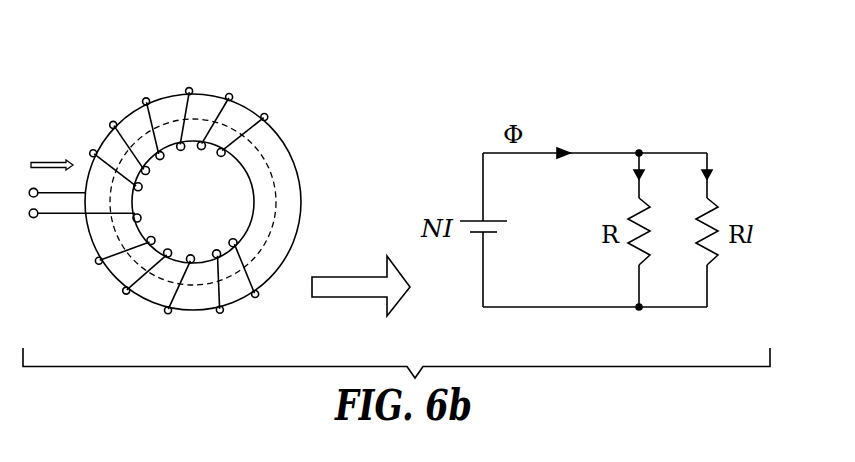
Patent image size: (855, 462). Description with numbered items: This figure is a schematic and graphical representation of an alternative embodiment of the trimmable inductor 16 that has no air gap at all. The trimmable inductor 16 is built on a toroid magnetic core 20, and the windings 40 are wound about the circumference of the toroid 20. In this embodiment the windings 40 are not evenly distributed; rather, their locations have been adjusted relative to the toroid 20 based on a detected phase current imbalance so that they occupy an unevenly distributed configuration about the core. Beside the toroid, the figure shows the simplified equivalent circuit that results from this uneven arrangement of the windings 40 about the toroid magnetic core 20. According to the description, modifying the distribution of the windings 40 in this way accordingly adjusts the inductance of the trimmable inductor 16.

The trimmable inductor 16 is at (95, 95).
The toroid magnetic core 20 is at (287, 166).
The windings 40 is at (231, 96).